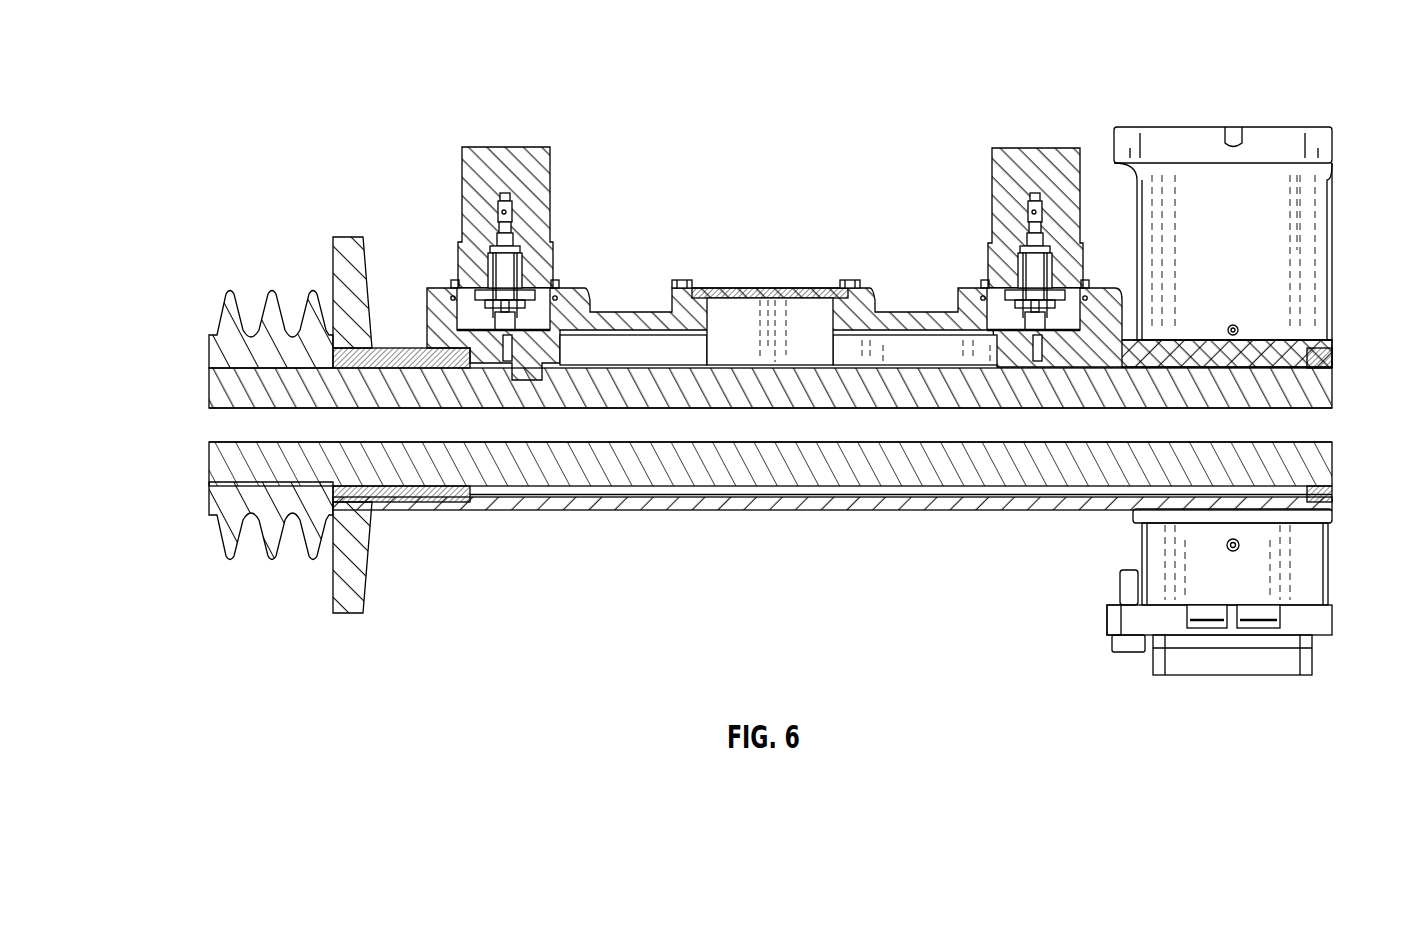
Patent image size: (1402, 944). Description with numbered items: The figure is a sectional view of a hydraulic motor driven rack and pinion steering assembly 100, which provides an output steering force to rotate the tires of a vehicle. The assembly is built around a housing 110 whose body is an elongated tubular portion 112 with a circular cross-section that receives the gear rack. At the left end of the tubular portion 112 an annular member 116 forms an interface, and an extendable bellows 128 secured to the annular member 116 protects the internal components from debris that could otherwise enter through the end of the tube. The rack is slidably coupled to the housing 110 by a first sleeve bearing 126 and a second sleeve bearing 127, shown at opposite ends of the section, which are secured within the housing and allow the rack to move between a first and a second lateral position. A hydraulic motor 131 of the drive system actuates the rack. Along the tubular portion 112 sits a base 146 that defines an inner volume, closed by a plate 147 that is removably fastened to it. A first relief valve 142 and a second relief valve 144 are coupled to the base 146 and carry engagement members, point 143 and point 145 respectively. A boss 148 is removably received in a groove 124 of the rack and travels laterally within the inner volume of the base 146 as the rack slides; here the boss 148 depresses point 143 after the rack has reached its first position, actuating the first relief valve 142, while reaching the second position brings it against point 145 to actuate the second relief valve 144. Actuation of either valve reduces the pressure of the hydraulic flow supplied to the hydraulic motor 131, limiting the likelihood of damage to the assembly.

The rack and pinion steering assembly 100 is at (350, 84).
The housing 110 is at (650, 510).
The tubular portion 112 is at (530, 505).
The annular member 116 is at (345, 237).
The groove 124 is at (515, 365).
The sleeve bearing 126 is at (418, 346).
The sleeve bearing 127 is at (1335, 358).
The extendable bellows 128 is at (232, 292).
The hydraulic motor 131 is at (1195, 183).
The first relief valve 142 is at (512, 147).
The point 143 is at (503, 333).
The second relief valve 144 is at (1020, 148).
The point 145 is at (1033, 333).
The base 146 is at (880, 310).
The plate 147 is at (790, 290).
The boss 148 is at (555, 341).